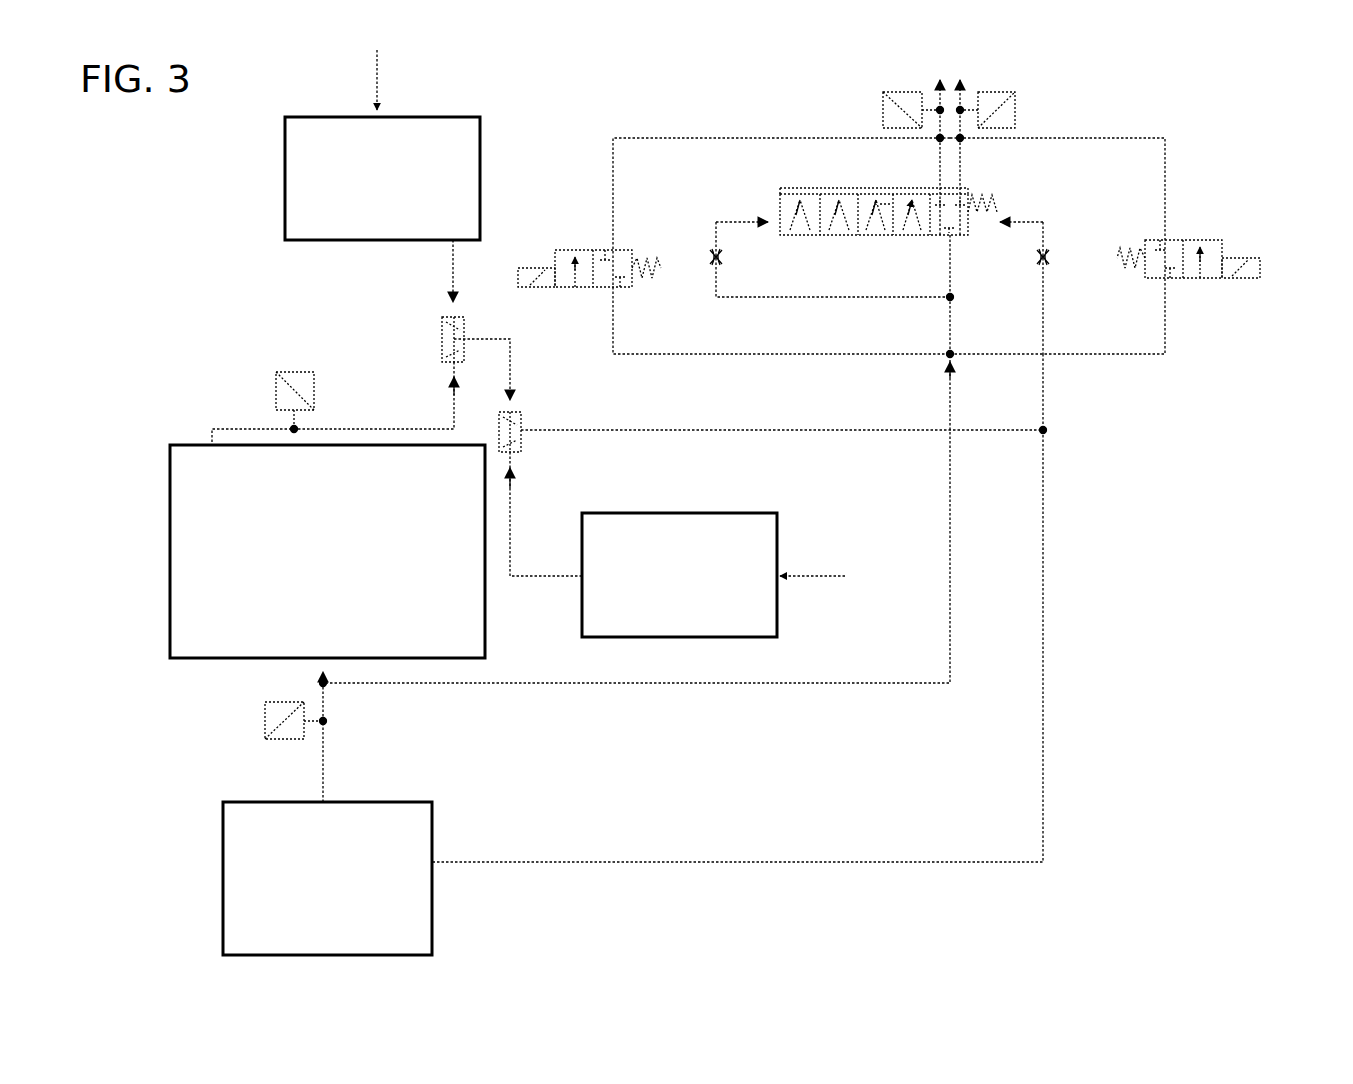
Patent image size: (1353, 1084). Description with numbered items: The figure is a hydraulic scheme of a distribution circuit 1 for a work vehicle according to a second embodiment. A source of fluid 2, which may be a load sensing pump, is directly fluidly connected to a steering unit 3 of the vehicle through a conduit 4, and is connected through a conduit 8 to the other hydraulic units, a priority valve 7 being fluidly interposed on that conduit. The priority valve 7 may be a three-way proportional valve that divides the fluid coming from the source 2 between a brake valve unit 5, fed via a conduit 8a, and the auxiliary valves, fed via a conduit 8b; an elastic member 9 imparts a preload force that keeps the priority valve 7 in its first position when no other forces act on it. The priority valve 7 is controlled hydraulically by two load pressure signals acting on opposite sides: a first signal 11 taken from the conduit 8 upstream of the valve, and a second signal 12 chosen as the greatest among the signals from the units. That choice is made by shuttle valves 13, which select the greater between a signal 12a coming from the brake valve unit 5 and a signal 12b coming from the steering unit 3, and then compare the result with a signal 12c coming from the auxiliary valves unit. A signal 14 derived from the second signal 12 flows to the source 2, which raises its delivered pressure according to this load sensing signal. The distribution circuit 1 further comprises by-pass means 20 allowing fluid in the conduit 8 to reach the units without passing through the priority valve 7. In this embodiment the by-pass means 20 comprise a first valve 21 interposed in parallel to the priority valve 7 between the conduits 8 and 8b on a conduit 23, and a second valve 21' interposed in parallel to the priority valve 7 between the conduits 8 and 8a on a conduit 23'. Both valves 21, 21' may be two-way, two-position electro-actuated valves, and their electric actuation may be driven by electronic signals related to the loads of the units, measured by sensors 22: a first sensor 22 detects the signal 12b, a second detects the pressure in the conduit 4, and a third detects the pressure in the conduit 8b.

The distribution circuit 1 is at (1240, 455).
The source of fluid 2 is at (222, 861).
The steering unit 3 is at (182, 545).
The conduit 4 is at (323, 766).
The brake valve unit 5 is at (448, 120).
The priority valve 7 is at (870, 186).
The conduit 8 is at (832, 686).
The conduit 8a is at (372, 80).
The conduit 8b is at (815, 575).
The elastic member 9 is at (1000, 200).
The first signal 11 is at (805, 305).
The second signal 12 is at (1055, 295).
The signal 12a is at (448, 262).
The signal 12b is at (372, 428).
The signal 12c is at (510, 560).
The shuttle valve 13 is at (442, 332).
The signal 14 is at (1045, 620).
The by-pass means 20 is at (565, 208).
The first valve 21 is at (1188, 288).
The second valve 21' is at (597, 239).
The sensor 22 is at (883, 108).
The conduit 23 is at (1057, 270).
The conduit 23' is at (781, 275).